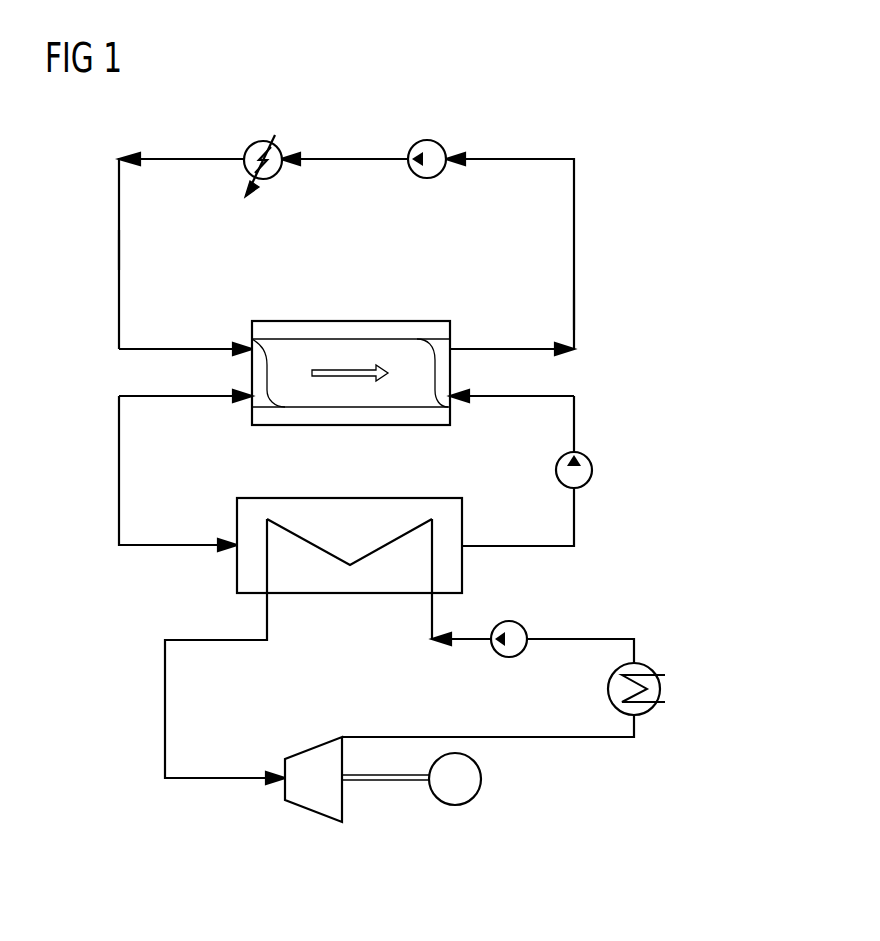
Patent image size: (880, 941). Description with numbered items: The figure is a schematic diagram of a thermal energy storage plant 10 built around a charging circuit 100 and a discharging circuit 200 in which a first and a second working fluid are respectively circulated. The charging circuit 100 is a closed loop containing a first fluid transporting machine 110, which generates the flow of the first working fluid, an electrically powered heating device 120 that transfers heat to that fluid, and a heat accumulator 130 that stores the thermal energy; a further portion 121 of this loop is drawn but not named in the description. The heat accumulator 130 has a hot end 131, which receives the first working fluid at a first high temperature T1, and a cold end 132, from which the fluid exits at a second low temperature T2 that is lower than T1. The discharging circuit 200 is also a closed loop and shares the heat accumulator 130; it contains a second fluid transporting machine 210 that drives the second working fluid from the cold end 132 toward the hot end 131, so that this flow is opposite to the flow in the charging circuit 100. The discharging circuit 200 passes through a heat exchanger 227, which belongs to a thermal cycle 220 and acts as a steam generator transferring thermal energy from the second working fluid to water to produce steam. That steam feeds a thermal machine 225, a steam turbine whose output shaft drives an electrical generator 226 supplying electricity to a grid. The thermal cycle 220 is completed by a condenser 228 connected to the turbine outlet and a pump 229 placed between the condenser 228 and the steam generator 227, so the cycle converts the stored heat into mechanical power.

The thermal energy storage plant 10 is at (108, 769).
The charging circuit 100 is at (575, 192).
The first fluid transporting machine 110 is at (427, 140).
The heating device 120 is at (260, 140).
The line of first circuit 121 is at (193, 156).
The heat accumulator 130 is at (350, 320).
The hot end 131 is at (251, 345).
The cold end 132 is at (453, 342).
The discharging circuit 200 is at (575, 425).
The second fluid transporting machine 210 is at (593, 470).
The thermal cycle 220 is at (636, 728).
The thermal machine 225 is at (312, 746).
The electrical generator 226 is at (480, 797).
The heat exchanger 227 is at (350, 497).
The condenser 228 is at (645, 666).
The pump 229 is at (513, 620).
The first high temperature T1 is at (118, 253).
The second low temperature T2 is at (575, 309).